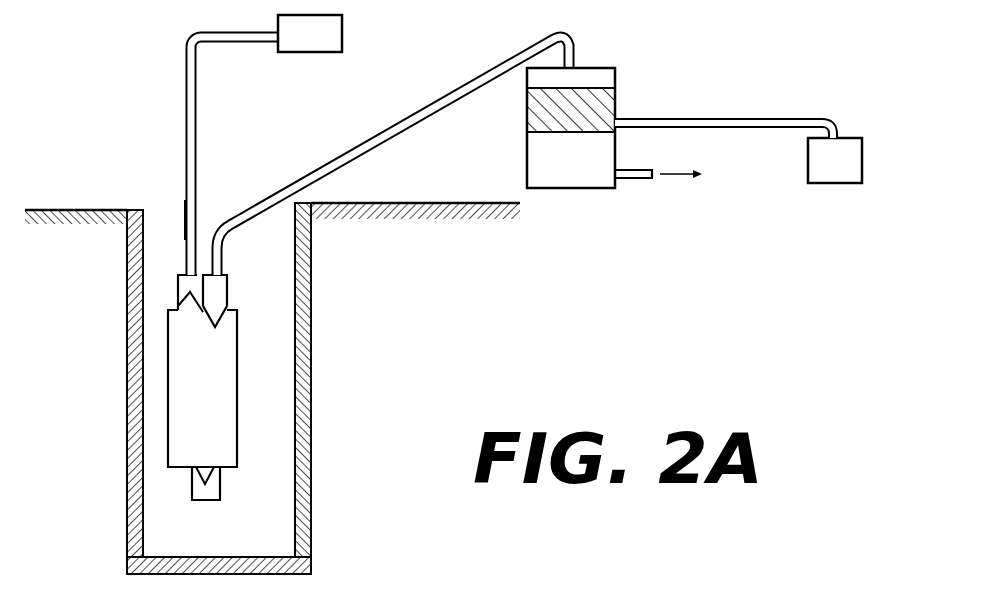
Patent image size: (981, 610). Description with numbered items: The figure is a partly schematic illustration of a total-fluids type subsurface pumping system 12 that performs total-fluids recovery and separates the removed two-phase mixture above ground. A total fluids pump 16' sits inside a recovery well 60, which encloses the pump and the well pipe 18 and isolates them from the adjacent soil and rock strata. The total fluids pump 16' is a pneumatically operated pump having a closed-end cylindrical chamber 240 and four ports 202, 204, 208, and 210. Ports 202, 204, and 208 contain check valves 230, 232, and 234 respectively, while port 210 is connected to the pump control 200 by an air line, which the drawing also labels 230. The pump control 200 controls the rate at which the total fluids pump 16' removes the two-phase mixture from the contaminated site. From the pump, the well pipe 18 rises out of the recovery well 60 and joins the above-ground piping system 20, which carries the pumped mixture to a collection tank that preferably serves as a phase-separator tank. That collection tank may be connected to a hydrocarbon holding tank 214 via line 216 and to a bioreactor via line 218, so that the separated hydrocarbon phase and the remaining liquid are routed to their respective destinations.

The subsurface pumping system 12 is at (123, 35).
The total fluids pump 16' is at (227, 388).
The well pipe 18 is at (241, 228).
The above-ground piping system 20 is at (405, 117).
The recovery well 60 is at (203, 547).
The pump control 200 is at (321, 43).
The port 202 is at (220, 497).
The port 204 is at (177, 292).
The port 208 is at (229, 284).
The port 210 is at (203, 222).
The hydrocarbon holding tank 214 is at (527, 160).
The line 216 is at (697, 118).
The line 218 is at (633, 170).
The check valve 230 is at (197, 82).
The check valve 232 is at (185, 300).
The check valve 234 is at (229, 324).
The closed-end cylindrical chamber 240 is at (239, 445).